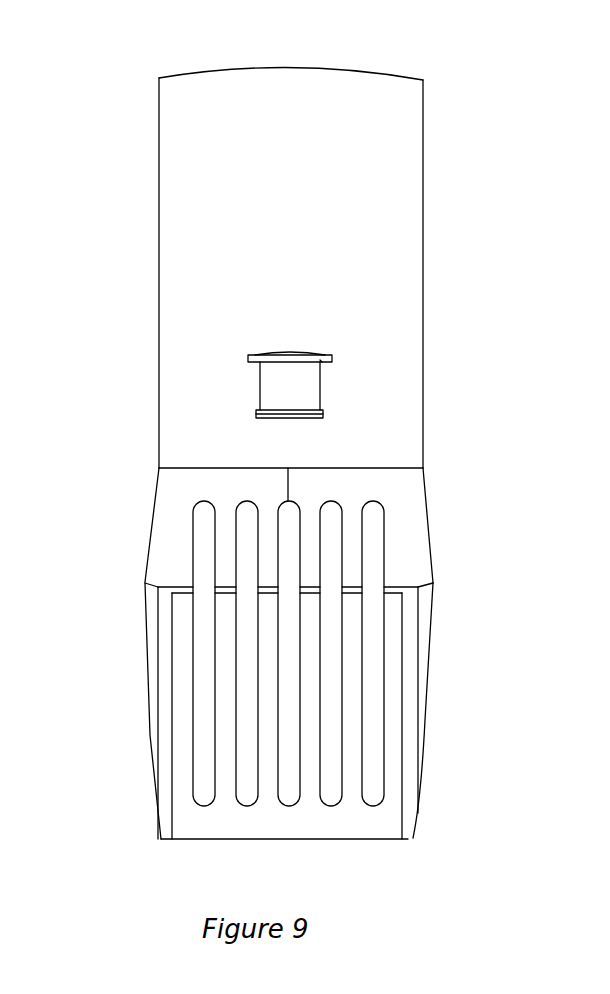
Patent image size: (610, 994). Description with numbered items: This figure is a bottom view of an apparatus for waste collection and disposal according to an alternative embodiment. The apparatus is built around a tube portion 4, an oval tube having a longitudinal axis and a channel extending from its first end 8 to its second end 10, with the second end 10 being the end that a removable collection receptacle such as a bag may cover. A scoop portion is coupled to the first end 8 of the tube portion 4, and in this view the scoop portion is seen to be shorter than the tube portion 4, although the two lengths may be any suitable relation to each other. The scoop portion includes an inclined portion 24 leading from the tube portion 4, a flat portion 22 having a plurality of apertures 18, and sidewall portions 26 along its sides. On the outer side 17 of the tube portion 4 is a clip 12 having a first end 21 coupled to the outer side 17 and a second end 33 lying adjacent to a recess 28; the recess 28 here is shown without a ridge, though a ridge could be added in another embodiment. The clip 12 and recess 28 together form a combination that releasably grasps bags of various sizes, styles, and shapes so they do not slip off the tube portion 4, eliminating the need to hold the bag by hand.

The second end 10 is at (163, 76).
The outer side 17 is at (414, 163).
The tube portion 4 is at (503, 248).
The recess 28 is at (330, 352).
The clip 12 is at (272, 378).
The second end 33 is at (322, 360).
The first end 21 is at (317, 405).
The first end 8 is at (158, 468).
The inclined portion 24 is at (413, 508).
The sidewall portions 26 is at (150, 630).
The flat portion 22 is at (178, 746).
The apertures 18 is at (205, 795).